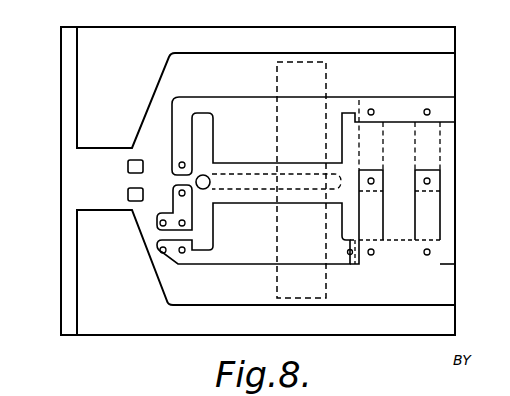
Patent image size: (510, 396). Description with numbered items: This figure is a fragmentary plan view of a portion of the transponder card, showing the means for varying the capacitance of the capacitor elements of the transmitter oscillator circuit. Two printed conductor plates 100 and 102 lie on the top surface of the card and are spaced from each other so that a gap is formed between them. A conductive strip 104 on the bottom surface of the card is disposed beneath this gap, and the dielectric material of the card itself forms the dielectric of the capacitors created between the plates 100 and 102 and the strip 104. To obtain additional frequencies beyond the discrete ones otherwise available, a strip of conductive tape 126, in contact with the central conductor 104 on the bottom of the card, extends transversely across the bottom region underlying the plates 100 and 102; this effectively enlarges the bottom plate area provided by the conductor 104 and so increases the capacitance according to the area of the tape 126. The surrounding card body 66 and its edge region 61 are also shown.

The circuit board 66 is at (142, 40).
The board edge 61 is at (61, 178).
The plate 100 is at (258, 140).
The plate 102 is at (258, 242).
The conductive strip 104 is at (296, 178).
The conductive tape 126 is at (333, 80).